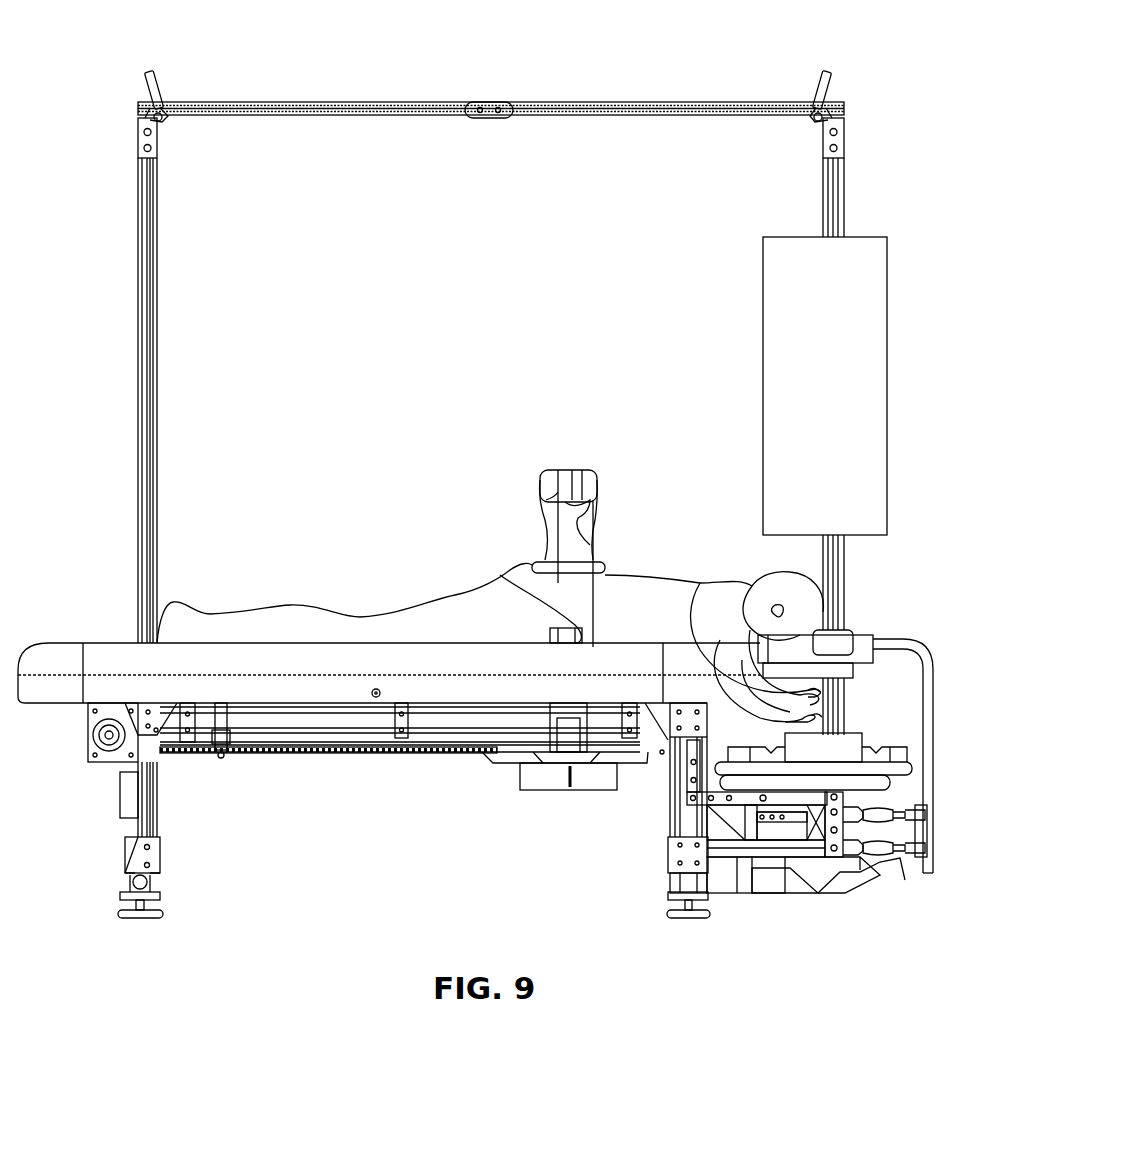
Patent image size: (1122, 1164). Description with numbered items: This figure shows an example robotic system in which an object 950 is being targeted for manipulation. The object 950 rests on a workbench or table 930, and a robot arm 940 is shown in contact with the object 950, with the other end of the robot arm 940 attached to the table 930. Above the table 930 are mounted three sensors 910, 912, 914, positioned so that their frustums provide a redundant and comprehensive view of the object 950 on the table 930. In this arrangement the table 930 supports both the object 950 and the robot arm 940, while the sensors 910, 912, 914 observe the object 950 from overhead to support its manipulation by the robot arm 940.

The sensor 910 is at (147, 85).
The sensor 912 is at (487, 120).
The sensor 914 is at (832, 85).
The workbench or table 930 is at (118, 643).
The robot arm 940 is at (577, 470).
The object 950 is at (658, 578).